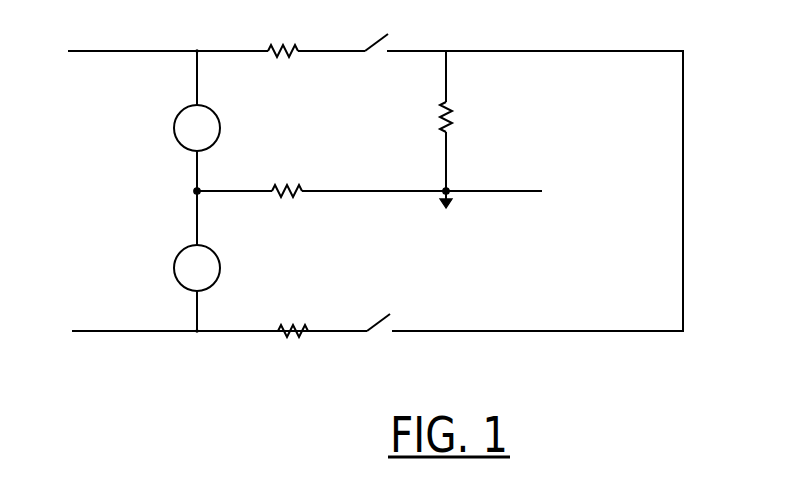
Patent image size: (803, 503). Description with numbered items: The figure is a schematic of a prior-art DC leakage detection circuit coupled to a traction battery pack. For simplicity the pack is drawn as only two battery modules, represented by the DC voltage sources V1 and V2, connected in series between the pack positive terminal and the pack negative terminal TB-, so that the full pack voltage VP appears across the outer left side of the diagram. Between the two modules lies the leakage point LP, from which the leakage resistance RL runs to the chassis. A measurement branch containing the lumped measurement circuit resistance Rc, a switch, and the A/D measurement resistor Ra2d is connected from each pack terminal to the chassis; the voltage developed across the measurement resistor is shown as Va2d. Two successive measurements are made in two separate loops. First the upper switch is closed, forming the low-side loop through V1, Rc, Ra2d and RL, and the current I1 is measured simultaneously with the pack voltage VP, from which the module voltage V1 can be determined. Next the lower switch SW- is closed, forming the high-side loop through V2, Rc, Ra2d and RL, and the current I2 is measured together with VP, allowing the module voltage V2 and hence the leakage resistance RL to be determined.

The traction battery pack negative TB- is at (206, 349).
The measurement circuit resistance Rc is at (288, 197).
The switch SW− SW- is at (386, 340).
The TB+ to leakage point voltage V1 is at (197, 128).
The leakage point to TB− voltage V2 is at (197, 268).
The leakage point LP is at (198, 191).
The leakage resistance RL is at (287, 174).
The A/D measurement resistor Ra2d is at (472, 124).
The A/D measurement voltage Va2d is at (533, 51).
The traction battery pack voltage VP is at (83, 51).
The first measurement current I1 is at (330, 160).
The second measurement current I2 is at (258, 287).